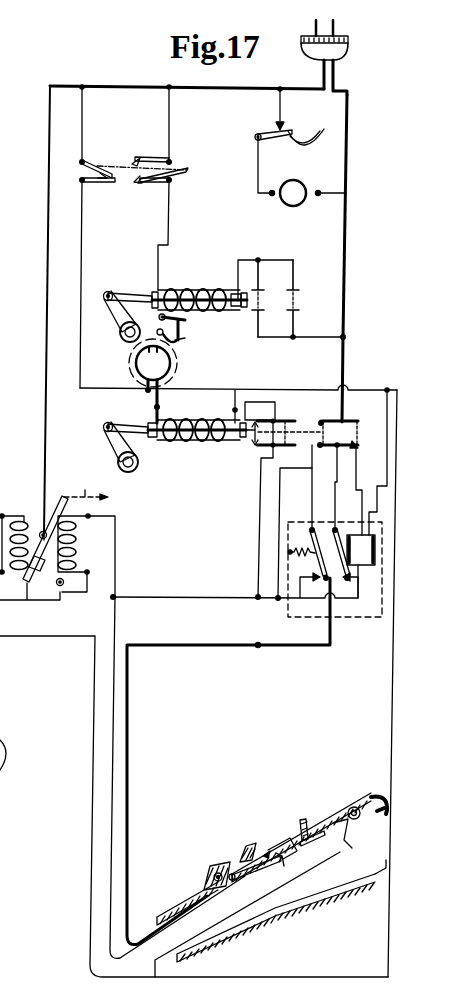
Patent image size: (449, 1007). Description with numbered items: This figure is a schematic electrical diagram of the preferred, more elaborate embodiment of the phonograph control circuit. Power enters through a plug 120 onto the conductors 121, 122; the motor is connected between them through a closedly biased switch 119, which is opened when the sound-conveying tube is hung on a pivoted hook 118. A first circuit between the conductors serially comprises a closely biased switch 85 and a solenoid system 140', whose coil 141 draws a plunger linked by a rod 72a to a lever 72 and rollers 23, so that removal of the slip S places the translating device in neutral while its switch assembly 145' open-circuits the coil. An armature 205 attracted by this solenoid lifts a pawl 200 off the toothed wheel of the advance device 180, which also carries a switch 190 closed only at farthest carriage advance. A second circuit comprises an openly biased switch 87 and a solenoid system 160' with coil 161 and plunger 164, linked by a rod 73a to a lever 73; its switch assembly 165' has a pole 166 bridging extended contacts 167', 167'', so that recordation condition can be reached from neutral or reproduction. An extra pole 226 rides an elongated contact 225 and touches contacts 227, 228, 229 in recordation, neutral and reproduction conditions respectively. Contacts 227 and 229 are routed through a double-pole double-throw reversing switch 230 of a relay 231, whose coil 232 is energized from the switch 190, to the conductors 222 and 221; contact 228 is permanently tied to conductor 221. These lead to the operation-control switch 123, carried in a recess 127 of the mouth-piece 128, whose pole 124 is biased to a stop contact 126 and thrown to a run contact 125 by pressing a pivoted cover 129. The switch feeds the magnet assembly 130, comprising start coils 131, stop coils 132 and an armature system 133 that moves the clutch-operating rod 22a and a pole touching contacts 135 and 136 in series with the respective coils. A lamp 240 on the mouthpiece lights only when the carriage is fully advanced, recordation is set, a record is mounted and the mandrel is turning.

The plug 120 is at (345, 49).
The conductor 121 is at (117, 86).
The conductor 122 is at (346, 358).
The pivoted hook 118 is at (307, 142).
The closedly biased switch 119 is at (286, 124).
The closely biased switch 85 is at (137, 184).
The openly biased switch 87 is at (105, 186).
The slip S is at (187, 170).
The switch assembly 145' is at (290, 293).
The solenoid system 140' is at (199, 317).
The coil 141 is at (194, 290).
The rod 72a is at (128, 295).
The lever 72 is at (119, 312).
The roller 23 is at (121, 337).
The armature 205 is at (159, 316).
The pawl 200 is at (181, 344).
The advance device 180 is at (134, 364).
The switch 190 is at (153, 351).
The solenoid system 160' is at (198, 448).
The coil 161 is at (195, 422).
The magnetic plunger 164 is at (149, 422).
The rod 73a is at (114, 424).
The lever 73 is at (112, 442).
The switch assembly 165' is at (273, 507).
The pole 166 is at (260, 411).
The contacts 167' is at (293, 409).
The relay contact 167'' is at (243, 454).
The elongated contact 225 is at (347, 423).
The extra pole 226 is at (318, 422).
The contact 227 is at (316, 446).
The contact 228 is at (338, 444).
The contact 229 is at (362, 484).
The magnet assembly 130 is at (24, 504).
The start coils 131 is at (14, 544).
The stop coils 132 is at (76, 541).
The armature system 133 is at (56, 588).
The contact 135 is at (68, 592).
The contact 136 is at (18, 603).
The clutch-operating rod 22a is at (86, 489).
The conductor 221 is at (195, 597).
The conductor 222 is at (200, 649).
The reversing switch 230 is at (340, 590).
The relay 231 is at (356, 625).
The coil 232 is at (367, 494).
The mouth-piece 128 is at (330, 890).
The lamp 240 is at (356, 796).
The single-pole double-throw switch 123 is at (279, 818).
The pole 124 is at (222, 858).
The run contact 125 is at (275, 866).
The stop contact 126 is at (262, 856).
The recess 127 is at (300, 830).
The pivoted cover 129 is at (216, 861).